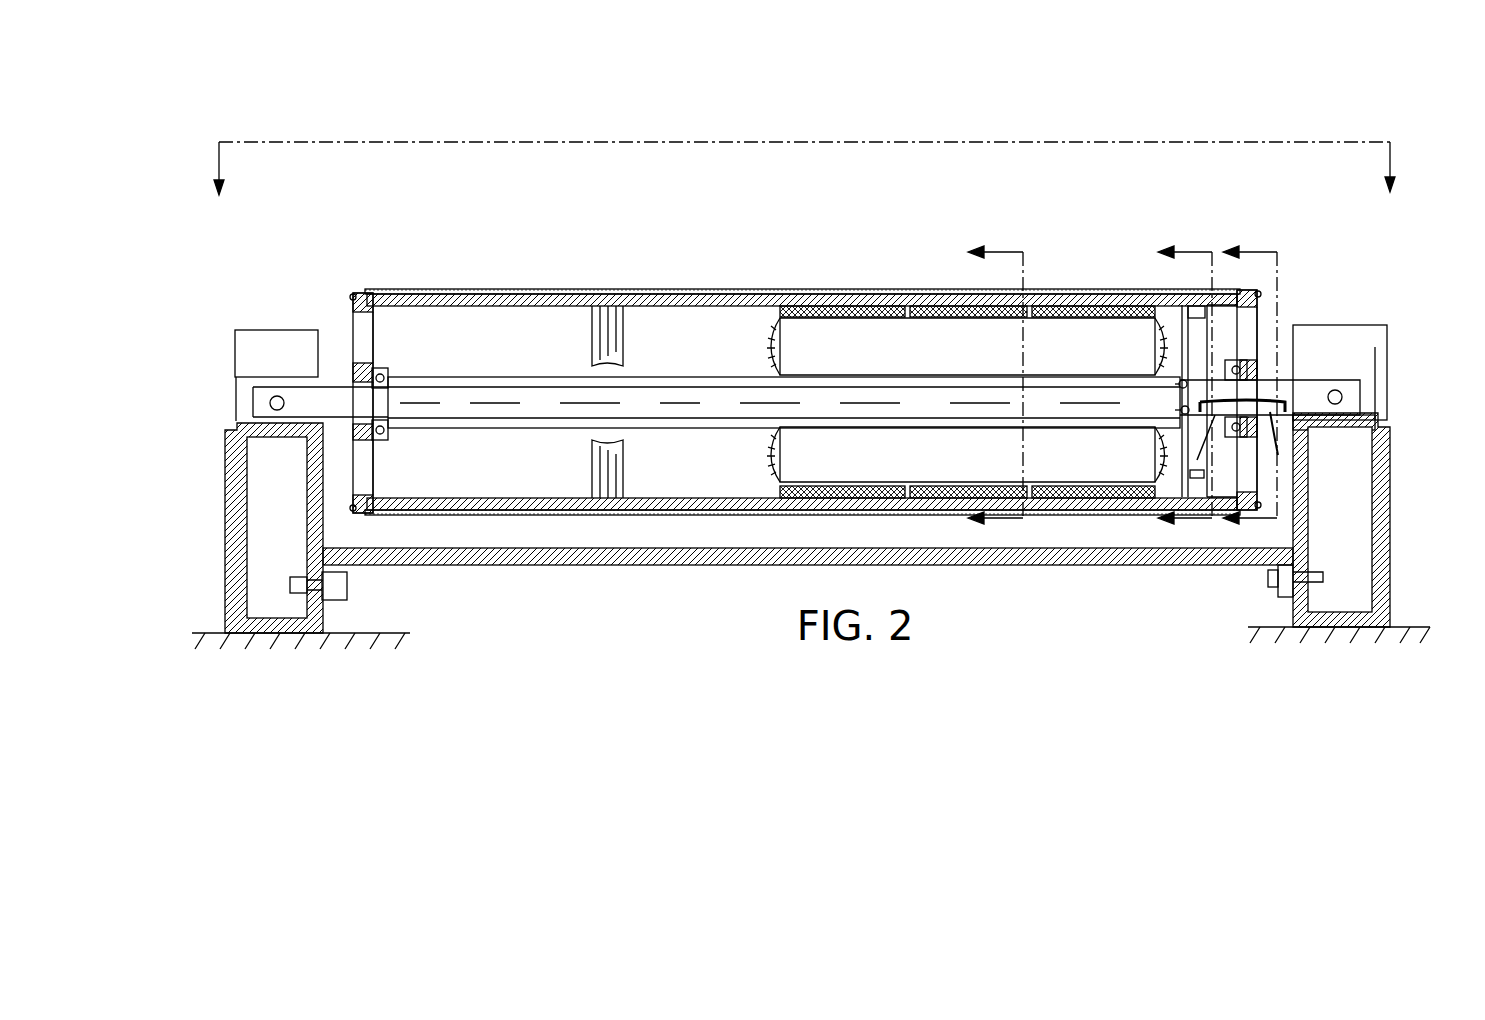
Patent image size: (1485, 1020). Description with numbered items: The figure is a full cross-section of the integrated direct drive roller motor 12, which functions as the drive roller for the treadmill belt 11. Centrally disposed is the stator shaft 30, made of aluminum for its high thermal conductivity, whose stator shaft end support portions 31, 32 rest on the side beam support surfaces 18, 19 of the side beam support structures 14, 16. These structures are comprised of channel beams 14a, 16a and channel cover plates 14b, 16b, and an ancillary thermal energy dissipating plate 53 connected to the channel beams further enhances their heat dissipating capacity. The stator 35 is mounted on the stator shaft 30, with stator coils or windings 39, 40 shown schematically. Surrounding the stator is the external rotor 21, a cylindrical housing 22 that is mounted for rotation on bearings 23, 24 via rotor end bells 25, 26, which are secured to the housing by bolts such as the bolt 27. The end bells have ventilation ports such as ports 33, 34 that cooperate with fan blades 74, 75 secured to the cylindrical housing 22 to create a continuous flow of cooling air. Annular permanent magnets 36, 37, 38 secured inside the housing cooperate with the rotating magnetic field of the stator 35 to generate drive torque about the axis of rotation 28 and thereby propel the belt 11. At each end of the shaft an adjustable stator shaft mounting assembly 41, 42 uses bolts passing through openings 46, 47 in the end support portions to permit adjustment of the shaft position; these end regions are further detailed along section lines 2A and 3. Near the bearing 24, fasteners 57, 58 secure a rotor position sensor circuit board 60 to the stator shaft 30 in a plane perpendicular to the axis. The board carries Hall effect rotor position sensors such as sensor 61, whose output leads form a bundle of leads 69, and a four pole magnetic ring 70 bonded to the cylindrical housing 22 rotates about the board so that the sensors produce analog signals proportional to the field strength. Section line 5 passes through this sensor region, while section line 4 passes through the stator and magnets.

The direct drive roller motor 12 is at (488, 178).
The section line 2A is at (804, 168).
The treadmill belt 11 is at (655, 292).
The cylindrical housing 22 is at (530, 289).
The external rotor 21 is at (405, 314).
The rotor end bell 25 is at (355, 318).
The stator shaft end support portion 31 is at (322, 398).
The rotor end bell 26 is at (1258, 340).
The bolt 27 is at (1258, 322).
The ventilation port 33 is at (1262, 338).
The bearing 24 is at (1272, 378).
The annular permanent magnet 36 is at (832, 306).
The annular permanent magnet 37 is at (950, 318).
The stator 35 is at (967, 400).
The stator coil/winding 39 is at (768, 355).
The stator coil/winding 40 is at (768, 460).
The annular permanent magnet 38 is at (1090, 296).
The axis of rotation 28 is at (500, 400).
The stator shaft 30 is at (672, 420).
The side beam support surface 18 is at (1382, 404).
The bearing 23 is at (388, 378).
The stator shaft end support portion 32 is at (1250, 383).
The four pole magnetic ring 70 is at (1183, 318).
The rotor position sensor circuit board 60 is at (1207, 320).
The fan blade 74 is at (605, 305).
The fan blade 75 is at (607, 460).
The fastener 57 is at (1178, 388).
The fastener 58 is at (1181, 413).
The ventilation port 34 is at (1255, 470).
The Hall effect rotor position sensor 61 is at (1220, 478).
The bundle of leads 69 is at (1210, 452).
The adjustable stator shaft mounting assembly 42 is at (250, 312).
The opening 47 is at (248, 392).
The side beam support surface 19 is at (232, 411).
The adjustable stator shaft mounting assembly 41 is at (1345, 322).
The opening 46 is at (1340, 364).
The side beam support structure 14 is at (1432, 553).
The channel beam 14a is at (1310, 546).
The channel cover plate 14b is at (1372, 555).
The side beam support structure 16 is at (205, 545).
The channel beam 16a is at (305, 512).
The channel cover plate 16b is at (278, 520).
The ancillary thermal energy dissipating plate 53 is at (700, 565).
The section line 4 is at (995, 386).
The section line 5 is at (1185, 386).
The section line 3 is at (1250, 386).